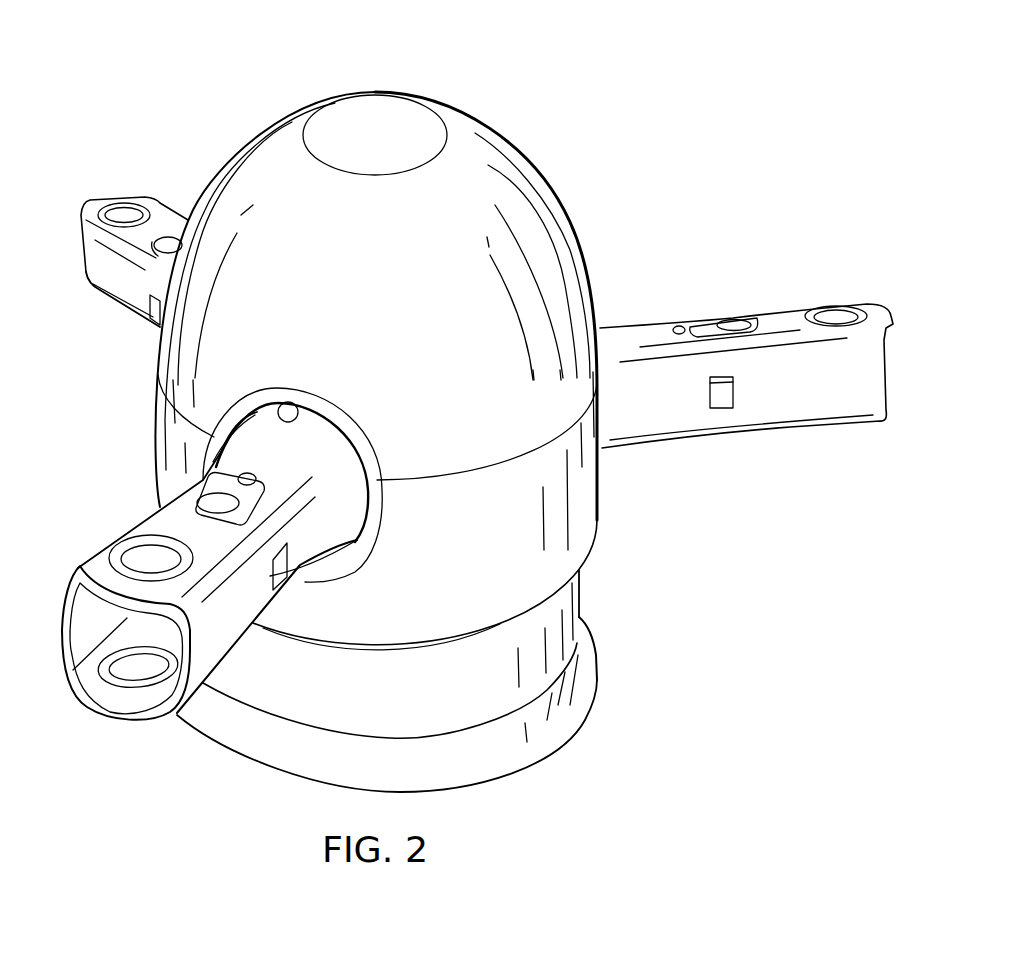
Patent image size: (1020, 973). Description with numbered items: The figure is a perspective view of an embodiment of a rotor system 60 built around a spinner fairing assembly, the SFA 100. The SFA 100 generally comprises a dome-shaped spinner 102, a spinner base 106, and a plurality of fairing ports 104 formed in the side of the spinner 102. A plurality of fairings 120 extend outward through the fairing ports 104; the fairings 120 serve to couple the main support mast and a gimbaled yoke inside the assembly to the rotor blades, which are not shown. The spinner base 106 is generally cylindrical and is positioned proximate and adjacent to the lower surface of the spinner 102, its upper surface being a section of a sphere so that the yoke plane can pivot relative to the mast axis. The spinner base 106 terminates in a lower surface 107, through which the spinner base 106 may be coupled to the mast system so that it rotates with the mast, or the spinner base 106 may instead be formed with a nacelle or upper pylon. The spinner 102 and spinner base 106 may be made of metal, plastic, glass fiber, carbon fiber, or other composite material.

The rotor system 60 is at (148, 54).
The spinner fairing assembly 100 is at (284, 123).
The spinner 102 is at (472, 120).
The fairing ports 104 is at (296, 402).
The spinner base 106 is at (583, 588).
The lower surface 107 is at (488, 773).
The fairings 120 is at (93, 208).